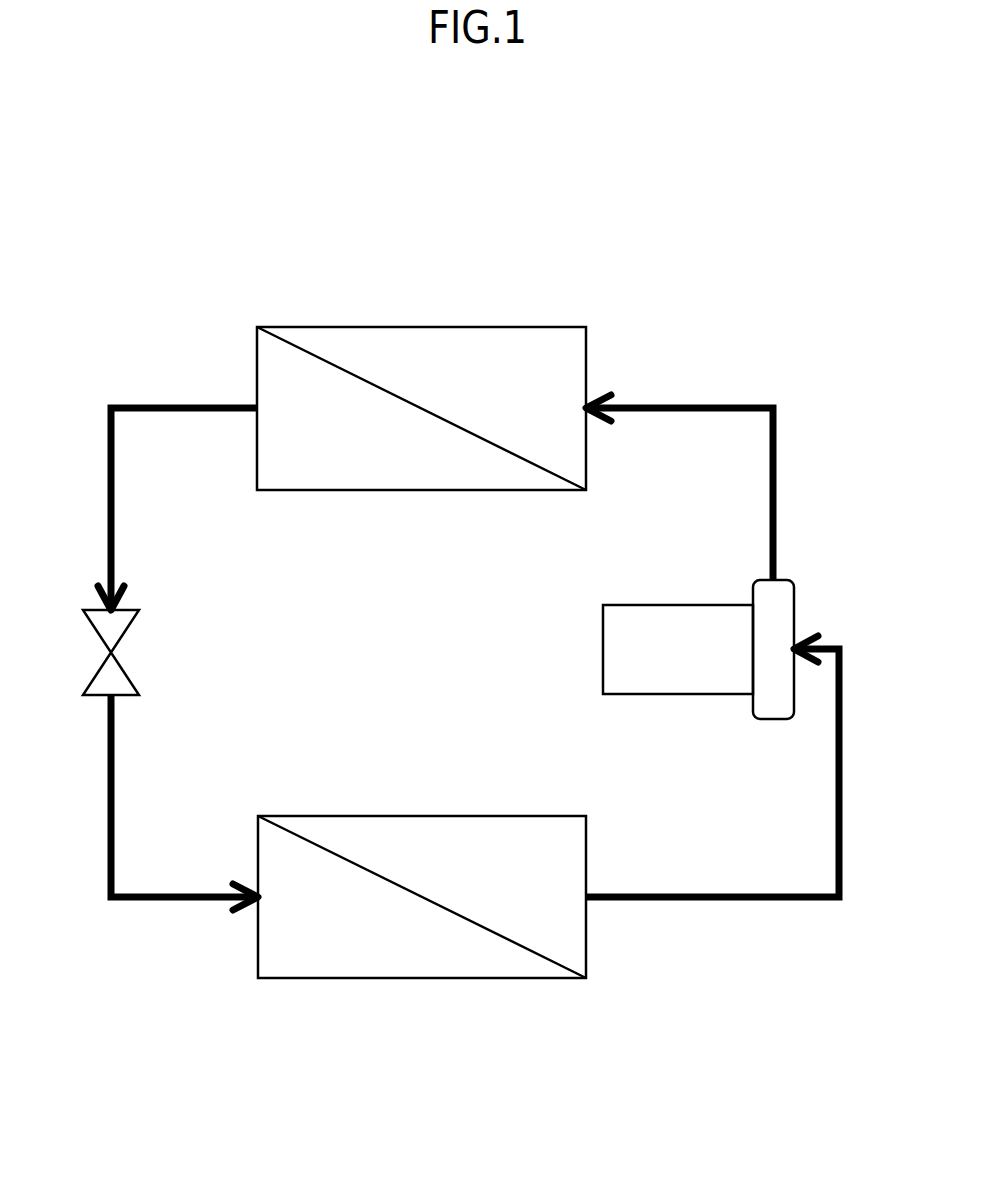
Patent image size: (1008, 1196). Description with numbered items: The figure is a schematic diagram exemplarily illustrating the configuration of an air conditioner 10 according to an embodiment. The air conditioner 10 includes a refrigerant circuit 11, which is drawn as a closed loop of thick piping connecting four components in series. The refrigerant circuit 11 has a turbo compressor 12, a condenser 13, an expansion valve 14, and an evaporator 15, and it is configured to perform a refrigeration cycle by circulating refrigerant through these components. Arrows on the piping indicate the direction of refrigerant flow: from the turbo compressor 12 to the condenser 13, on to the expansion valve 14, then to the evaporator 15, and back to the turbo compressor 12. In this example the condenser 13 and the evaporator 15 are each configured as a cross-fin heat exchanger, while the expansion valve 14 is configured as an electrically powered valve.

The air conditioner 10 is at (757, 327).
The refrigerant circuit 11 is at (168, 358).
The turbo compressor 12 is at (793, 580).
The condenser 13 is at (532, 327).
The expansion valve 14 is at (132, 610).
The evaporator 15 is at (587, 943).